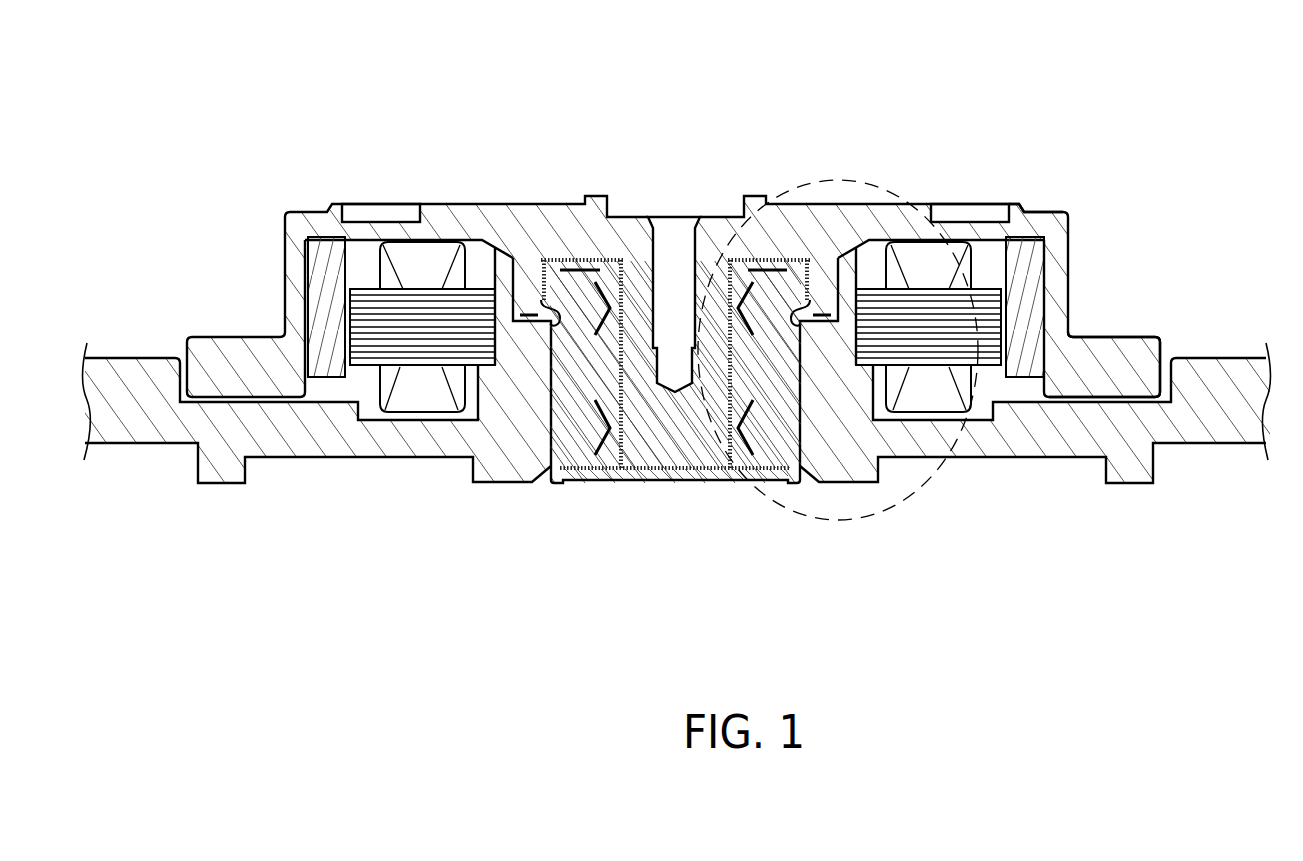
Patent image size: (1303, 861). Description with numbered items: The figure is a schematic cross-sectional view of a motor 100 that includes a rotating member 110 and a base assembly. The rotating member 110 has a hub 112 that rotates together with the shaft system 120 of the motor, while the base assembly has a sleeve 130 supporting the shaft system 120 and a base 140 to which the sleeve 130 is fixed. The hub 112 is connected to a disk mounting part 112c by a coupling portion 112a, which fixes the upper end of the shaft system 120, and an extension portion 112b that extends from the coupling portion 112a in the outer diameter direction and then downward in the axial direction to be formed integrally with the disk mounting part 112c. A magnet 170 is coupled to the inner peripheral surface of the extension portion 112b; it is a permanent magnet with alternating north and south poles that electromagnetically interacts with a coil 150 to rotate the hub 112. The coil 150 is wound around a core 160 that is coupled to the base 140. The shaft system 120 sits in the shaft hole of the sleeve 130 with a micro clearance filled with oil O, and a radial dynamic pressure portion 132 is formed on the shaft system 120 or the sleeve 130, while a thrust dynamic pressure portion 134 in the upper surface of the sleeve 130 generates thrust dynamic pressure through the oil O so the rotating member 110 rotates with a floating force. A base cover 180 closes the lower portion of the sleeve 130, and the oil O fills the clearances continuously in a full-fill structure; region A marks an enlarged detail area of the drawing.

The motor 100 is at (699, 41).
The rotating member 110 is at (278, 195).
The hub 112 is at (1087, 100).
The coupling portion 112a is at (777, 233).
The extension portion 112b is at (1037, 217).
The disk mounting part 112c is at (1075, 350).
The shaft system 120 is at (698, 445).
The sleeve 130 is at (775, 447).
The radial dynamic pressure portion 132 is at (705, 300).
The thrust dynamic pressure portion 134 is at (743, 257).
The base 140 is at (520, 395).
The coil 150 is at (930, 402).
The core 160 is at (872, 352).
The magnet 170 is at (1025, 368).
The base cover 180 is at (593, 475).
The oil O is at (623, 458).
The detail region A is at (833, 178).